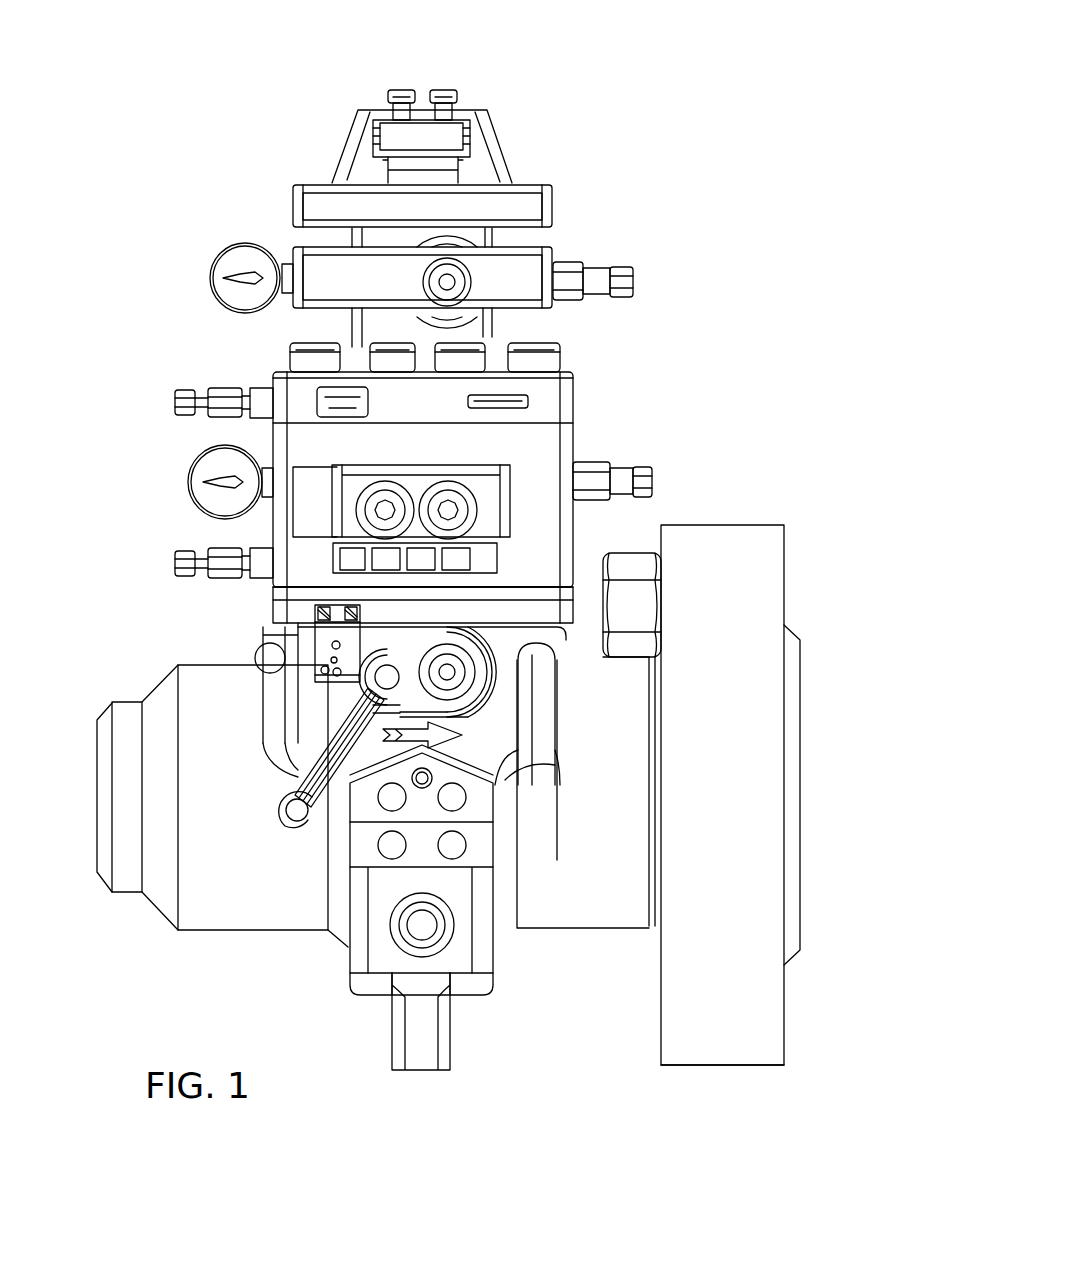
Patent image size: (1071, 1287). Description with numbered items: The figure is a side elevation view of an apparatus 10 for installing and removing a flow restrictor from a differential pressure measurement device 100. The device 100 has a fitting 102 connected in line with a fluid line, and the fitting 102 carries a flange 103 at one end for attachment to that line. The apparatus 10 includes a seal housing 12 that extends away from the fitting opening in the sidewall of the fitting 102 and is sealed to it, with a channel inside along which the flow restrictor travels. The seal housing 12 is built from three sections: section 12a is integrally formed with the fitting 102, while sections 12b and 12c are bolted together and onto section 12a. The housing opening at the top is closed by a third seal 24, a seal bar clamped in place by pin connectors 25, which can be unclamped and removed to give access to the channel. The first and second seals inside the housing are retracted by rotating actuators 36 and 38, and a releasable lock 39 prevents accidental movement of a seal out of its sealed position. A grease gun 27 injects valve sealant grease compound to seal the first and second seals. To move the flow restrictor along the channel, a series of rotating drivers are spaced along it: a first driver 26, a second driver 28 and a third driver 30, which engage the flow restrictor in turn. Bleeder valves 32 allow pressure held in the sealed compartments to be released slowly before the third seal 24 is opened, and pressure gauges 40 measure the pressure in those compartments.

The apparatus 10 is at (697, 113).
The seal housing 12 is at (290, 208).
The seal housing section 12a is at (280, 593).
The seal housing section 12b is at (273, 437).
The seal housing section 12c is at (550, 203).
The third seal 24 is at (345, 182).
The pin connectors 25 is at (403, 88).
The first driver 26 is at (473, 655).
The grease gun 27 is at (175, 397).
The second driver 28 is at (470, 505).
The third driver 30 is at (455, 283).
The bleeder valve 32 is at (633, 280).
The rotating actuator 36 is at (257, 668).
The rotating actuator 38 is at (362, 513).
The releasable lock 39 is at (310, 650).
The pressure gauge 40 is at (212, 262).
The differential pressure measurement device 100 is at (752, 503).
The fitting 102 is at (170, 677).
The flange 103 is at (688, 1065).